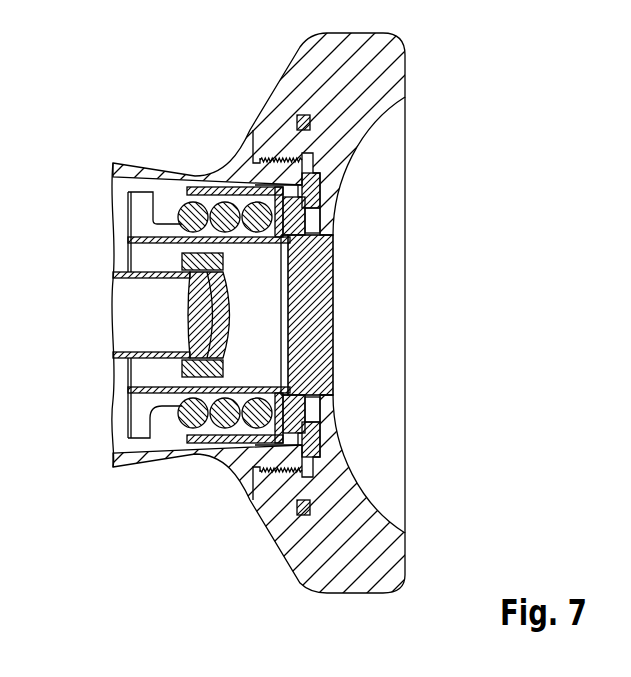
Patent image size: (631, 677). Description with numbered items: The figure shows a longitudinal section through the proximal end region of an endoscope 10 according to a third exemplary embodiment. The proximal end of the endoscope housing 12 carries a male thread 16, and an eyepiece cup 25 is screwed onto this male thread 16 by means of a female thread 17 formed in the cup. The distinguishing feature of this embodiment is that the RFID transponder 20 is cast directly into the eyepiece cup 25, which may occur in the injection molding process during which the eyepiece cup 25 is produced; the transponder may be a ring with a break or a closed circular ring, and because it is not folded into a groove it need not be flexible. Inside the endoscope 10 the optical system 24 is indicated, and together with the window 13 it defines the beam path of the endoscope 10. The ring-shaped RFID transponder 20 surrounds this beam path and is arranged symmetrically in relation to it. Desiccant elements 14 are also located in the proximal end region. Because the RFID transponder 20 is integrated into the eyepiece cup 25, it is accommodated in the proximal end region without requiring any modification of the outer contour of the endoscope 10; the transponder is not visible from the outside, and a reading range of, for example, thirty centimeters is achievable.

The endoscope 10 is at (173, 118).
The endoscope housing 12 is at (127, 164).
The window 13 is at (317, 322).
The desiccant elements 14 is at (193, 442).
The male thread 16 is at (278, 159).
The female thread 17 is at (280, 471).
The RFID transponder 20 is at (310, 120).
The optical system 24 is at (118, 313).
The eyepiece cup 25 is at (392, 553).